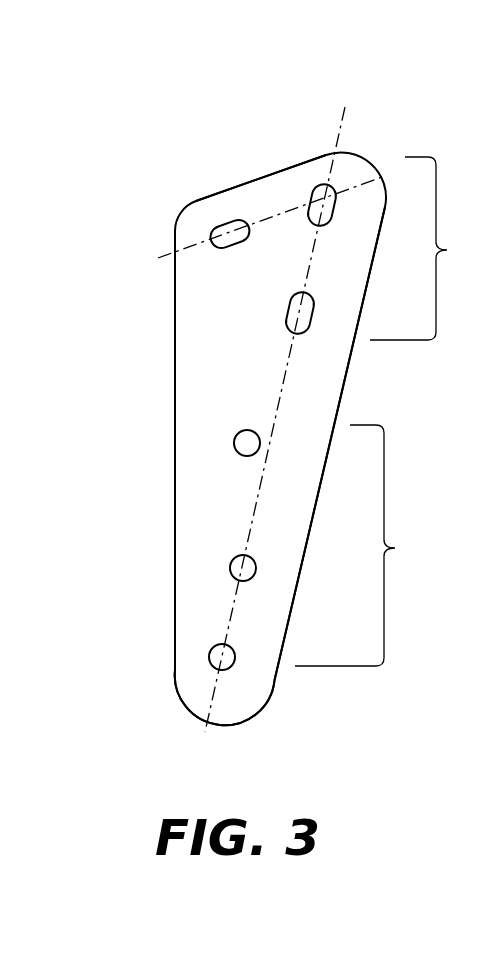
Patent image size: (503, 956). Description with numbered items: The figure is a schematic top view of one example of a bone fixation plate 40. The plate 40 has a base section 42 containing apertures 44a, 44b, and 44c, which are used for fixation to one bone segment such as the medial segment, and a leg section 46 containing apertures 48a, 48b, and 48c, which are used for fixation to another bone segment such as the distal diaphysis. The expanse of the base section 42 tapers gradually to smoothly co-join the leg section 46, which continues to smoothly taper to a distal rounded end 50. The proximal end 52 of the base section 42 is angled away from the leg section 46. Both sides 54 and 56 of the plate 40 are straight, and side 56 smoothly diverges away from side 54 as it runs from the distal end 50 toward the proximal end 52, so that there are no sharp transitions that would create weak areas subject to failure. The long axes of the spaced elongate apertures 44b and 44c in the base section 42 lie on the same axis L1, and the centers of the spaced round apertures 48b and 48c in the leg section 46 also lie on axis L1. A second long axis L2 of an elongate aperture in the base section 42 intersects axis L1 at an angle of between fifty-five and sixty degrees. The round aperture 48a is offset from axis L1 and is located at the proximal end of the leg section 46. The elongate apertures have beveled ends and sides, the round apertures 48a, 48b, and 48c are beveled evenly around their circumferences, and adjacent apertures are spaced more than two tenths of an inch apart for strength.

The fixation plate 40 is at (140, 89).
The base section 42 is at (429, 248).
The aperture 44a is at (228, 236).
The aperture 44b is at (322, 205).
The aperture 44c is at (296, 313).
The leg section 46 is at (365, 545).
The round aperture 48a is at (246, 443).
The round aperture 48b is at (243, 568).
The round aperture 48c is at (222, 657).
The distal rounded end 50 is at (240, 718).
The proximal end 52 is at (260, 168).
The side 54 is at (175, 393).
The side 56 is at (347, 373).
The axis L1 is at (341, 121).
The second long axis L2 is at (385, 165).